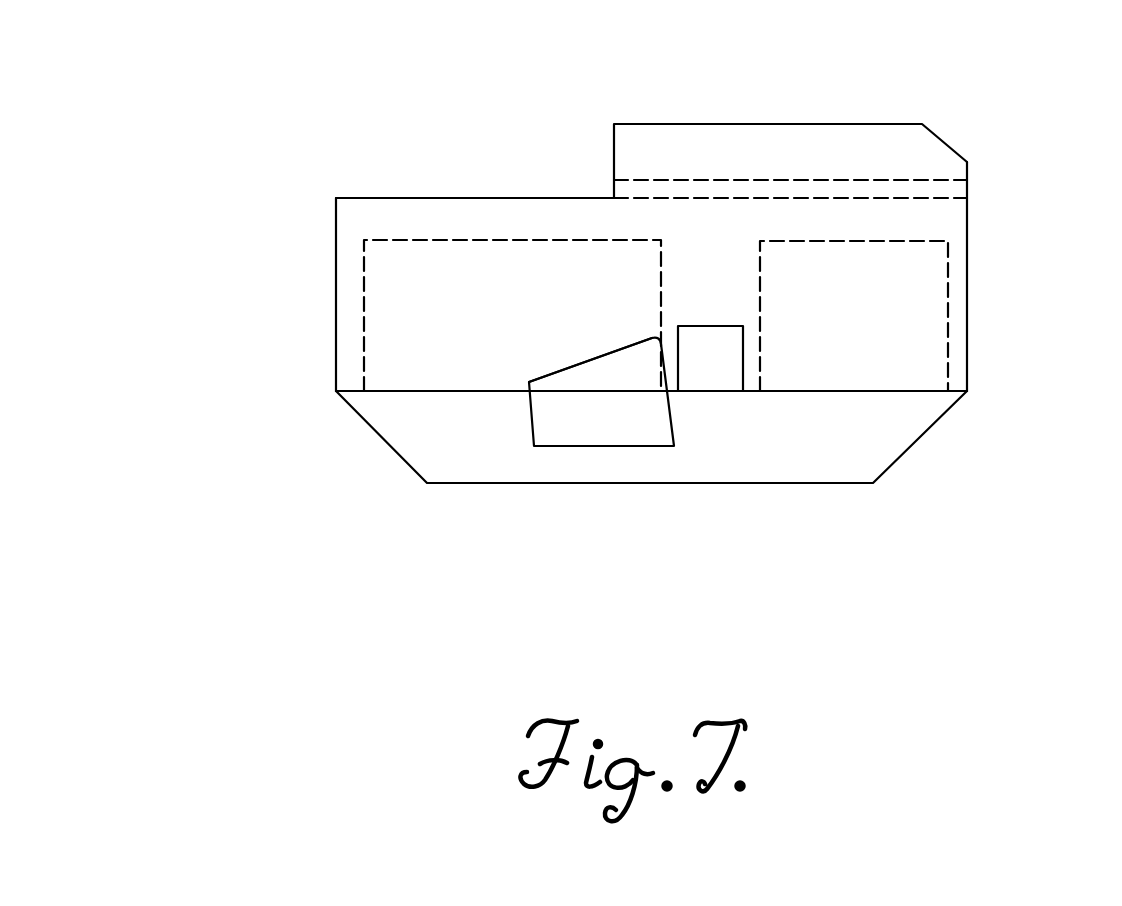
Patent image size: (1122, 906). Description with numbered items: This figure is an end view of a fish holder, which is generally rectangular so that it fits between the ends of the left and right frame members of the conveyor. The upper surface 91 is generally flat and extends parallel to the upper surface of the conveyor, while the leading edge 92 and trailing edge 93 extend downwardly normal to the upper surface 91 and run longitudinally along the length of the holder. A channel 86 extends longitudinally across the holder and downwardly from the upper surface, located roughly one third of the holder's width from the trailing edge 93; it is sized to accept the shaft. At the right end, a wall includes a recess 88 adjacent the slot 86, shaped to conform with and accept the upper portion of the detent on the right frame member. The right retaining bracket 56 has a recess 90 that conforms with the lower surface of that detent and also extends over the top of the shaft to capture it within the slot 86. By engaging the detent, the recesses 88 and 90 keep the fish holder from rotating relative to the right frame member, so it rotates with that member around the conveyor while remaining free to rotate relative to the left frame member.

The right retaining bracket 56 is at (402, 433).
The channel 86 is at (710, 363).
The recess 88 is at (607, 372).
The recess 90 is at (822, 143).
The upper surface 91 is at (365, 197).
The leading edge 92 is at (336, 287).
The trailing edge 93 is at (968, 287).